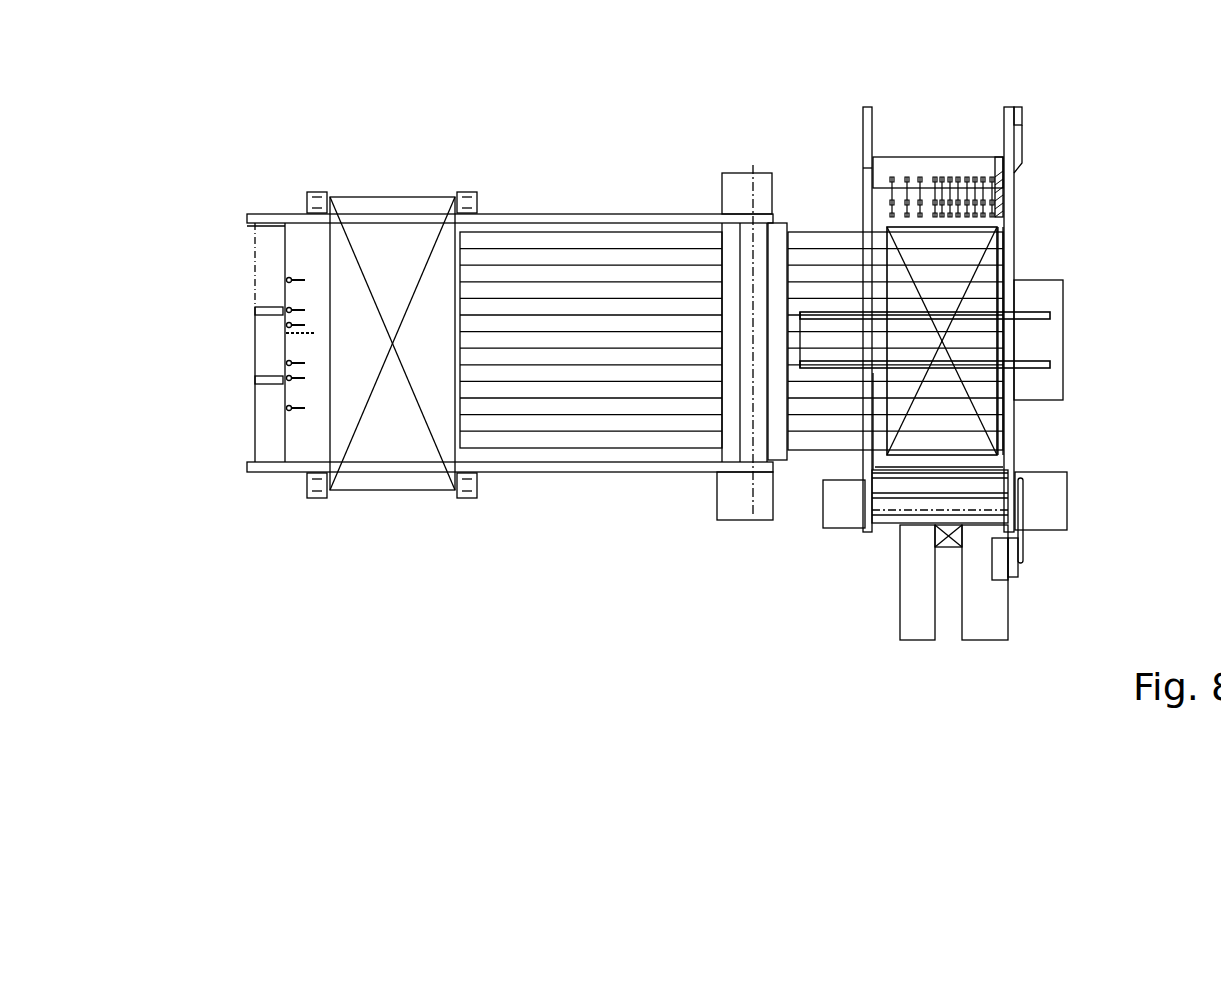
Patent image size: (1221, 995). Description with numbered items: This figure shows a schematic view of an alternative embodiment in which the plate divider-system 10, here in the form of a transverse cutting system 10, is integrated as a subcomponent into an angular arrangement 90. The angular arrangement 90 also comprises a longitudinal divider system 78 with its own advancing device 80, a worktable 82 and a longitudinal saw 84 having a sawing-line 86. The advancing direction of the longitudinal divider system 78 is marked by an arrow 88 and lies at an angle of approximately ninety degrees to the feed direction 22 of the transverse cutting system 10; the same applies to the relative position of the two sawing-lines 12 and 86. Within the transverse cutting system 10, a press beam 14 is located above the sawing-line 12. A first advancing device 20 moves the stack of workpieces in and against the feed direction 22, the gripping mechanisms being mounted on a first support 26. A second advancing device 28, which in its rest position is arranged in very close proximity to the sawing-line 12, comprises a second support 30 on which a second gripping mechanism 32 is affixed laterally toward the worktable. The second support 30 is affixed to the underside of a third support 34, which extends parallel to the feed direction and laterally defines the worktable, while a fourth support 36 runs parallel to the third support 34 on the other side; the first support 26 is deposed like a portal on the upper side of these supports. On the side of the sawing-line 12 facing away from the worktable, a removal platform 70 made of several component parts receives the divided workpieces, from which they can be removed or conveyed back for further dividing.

The plate divider-system 10 is at (975, 75).
The sawing-line 12 is at (862, 510).
The press beam 14 is at (888, 515).
The first advancing device 20 is at (865, 168).
The feed direction 22 is at (1083, 300).
The first support 26 is at (893, 168).
The second advancing device 28 is at (1041, 125).
The second support 30 is at (1020, 148).
The second gripping mechanism 32 is at (1087, 205).
The third support 34 is at (1013, 418).
The fourth support 36 is at (867, 130).
The removal platform 70 is at (917, 630).
The longitudinal divider system 78 is at (532, 607).
The advancing device 80 is at (265, 273).
The worktable 82 is at (552, 238).
The longitudinal saw 84 is at (738, 210).
The sawing-line 86 is at (750, 170).
The advancing direction arrow 88 is at (538, 502).
The angular arrangement 90 is at (193, 645).